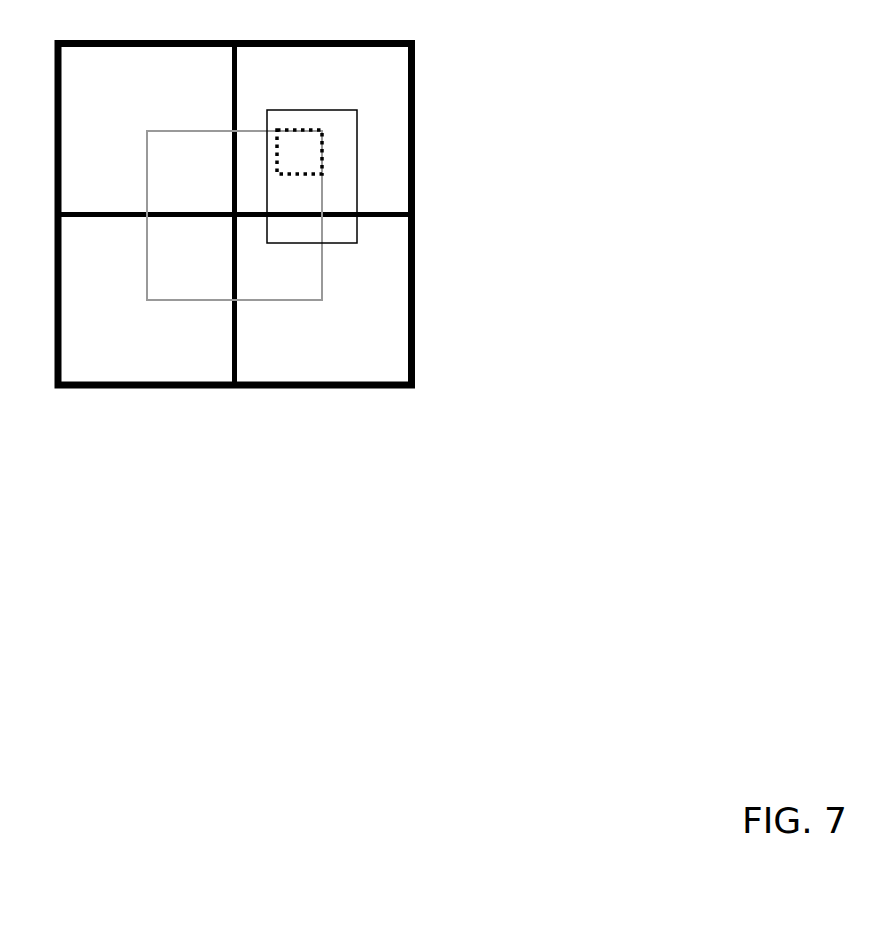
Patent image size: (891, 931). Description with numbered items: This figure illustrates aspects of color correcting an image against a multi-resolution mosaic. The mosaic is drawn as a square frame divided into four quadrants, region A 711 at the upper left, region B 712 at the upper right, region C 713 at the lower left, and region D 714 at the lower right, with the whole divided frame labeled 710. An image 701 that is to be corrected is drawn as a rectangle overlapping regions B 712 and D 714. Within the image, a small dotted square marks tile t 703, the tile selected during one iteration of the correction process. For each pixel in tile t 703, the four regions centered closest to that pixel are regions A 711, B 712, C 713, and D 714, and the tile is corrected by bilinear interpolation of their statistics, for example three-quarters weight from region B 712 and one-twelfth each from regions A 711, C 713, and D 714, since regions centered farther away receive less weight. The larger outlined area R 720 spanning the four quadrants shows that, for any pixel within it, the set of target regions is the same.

The image frame divided into quadrants 710 is at (412, 363).
The region A 711 is at (151, 85).
The region B 712 is at (331, 85).
The region C 713 is at (150, 337).
The region D 714 is at (325, 342).
The area R 720 is at (332, 295).
The image 701 is at (357, 243).
The tile t 703 is at (332, 150).